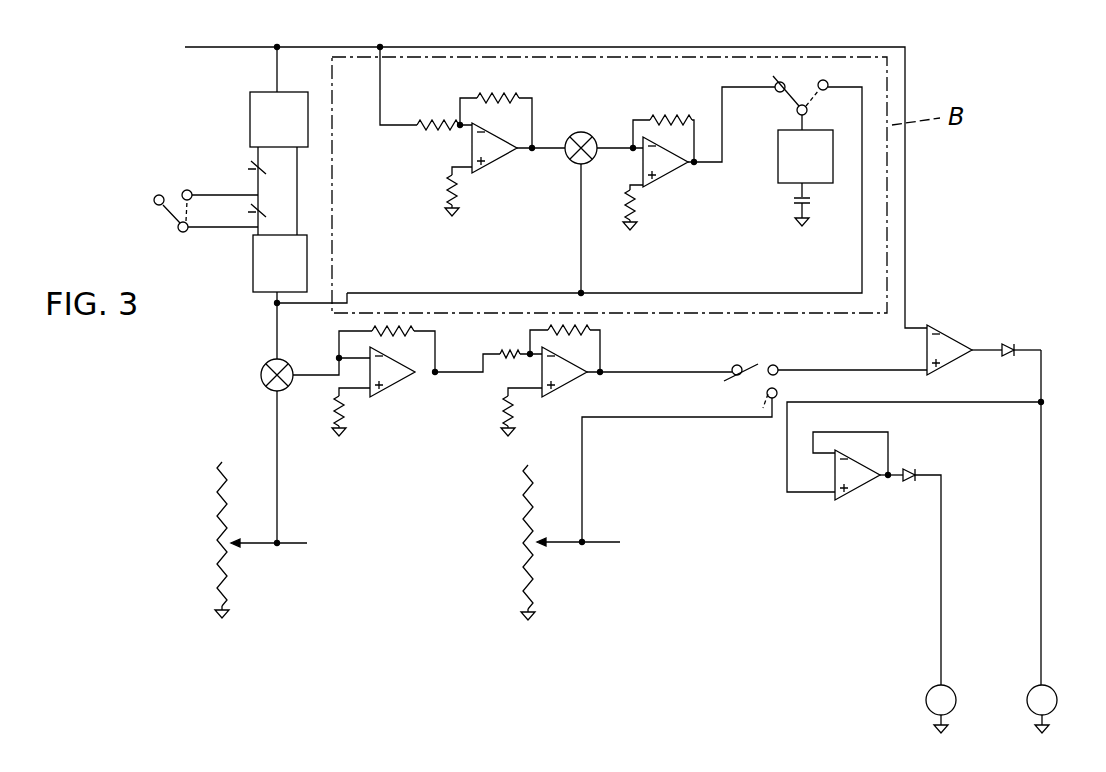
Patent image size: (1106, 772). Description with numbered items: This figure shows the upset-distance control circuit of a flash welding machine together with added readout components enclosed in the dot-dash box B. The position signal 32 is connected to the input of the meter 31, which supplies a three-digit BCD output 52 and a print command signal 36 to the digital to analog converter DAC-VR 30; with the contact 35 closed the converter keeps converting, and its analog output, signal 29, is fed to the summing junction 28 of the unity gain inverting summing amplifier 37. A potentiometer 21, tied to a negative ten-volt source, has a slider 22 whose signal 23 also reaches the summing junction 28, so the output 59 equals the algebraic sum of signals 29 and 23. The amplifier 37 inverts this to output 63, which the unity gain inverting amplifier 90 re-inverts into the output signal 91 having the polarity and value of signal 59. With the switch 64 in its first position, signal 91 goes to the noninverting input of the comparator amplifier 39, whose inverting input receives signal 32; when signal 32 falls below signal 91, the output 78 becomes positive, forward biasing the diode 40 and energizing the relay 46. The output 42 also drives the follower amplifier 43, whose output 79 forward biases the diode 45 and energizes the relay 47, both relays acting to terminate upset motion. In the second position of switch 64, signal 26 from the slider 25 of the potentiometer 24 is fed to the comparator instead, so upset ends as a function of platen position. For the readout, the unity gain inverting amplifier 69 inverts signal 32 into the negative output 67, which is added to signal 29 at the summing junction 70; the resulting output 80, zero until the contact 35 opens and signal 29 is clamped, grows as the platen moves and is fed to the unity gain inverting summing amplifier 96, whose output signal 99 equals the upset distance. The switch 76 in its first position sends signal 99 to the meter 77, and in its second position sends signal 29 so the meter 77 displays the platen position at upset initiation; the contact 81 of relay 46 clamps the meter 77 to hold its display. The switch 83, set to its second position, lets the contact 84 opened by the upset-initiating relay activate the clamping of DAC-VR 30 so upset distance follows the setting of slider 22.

The potentiometer 21 is at (225, 537).
The slider 22 is at (300, 545).
The signal 23 is at (280, 461).
The potentiometer 24 is at (448, 293).
The slider 25 is at (600, 544).
The signal 26 is at (583, 479).
The summing junction 28 is at (262, 375).
The signal 29 is at (277, 327).
The digital to analog converter DAC-VR 30 is at (253, 268).
The meter 31 is at (250, 100).
The signal 32 is at (592, 46).
The contact 35 is at (250, 168).
The print command signal 36 is at (258, 150).
The unity gain inverting summing amplifier 37 is at (395, 385).
The comparator amplifier 39 is at (948, 364).
The diode 40 is at (1006, 343).
The output 42 is at (1043, 382).
The follower amplifier 43 is at (855, 492).
The diode 45 is at (910, 468).
The relay 46 is at (1028, 693).
The relay 47 is at (927, 694).
The BCD output 52 is at (297, 212).
The output 59 is at (312, 368).
The output 63 is at (470, 374).
The switch 64 is at (750, 372).
The output 67 is at (545, 145).
The unity gain inverting amplifier 69 is at (492, 163).
The summing junction 70 is at (571, 162).
The switch 76 is at (786, 97).
The meter 77 is at (778, 173).
The output 78 is at (980, 348).
The output 79 is at (897, 480).
The output 80 is at (600, 143).
The contact 81 is at (793, 203).
The switch 83 is at (178, 226).
The contact 84 is at (270, 208).
The unity gain inverting amplifier 90 is at (577, 381).
The output signal 91 is at (652, 370).
The unity gain inverting summing amplifier 96 is at (670, 175).
The output signal 99 is at (722, 98).